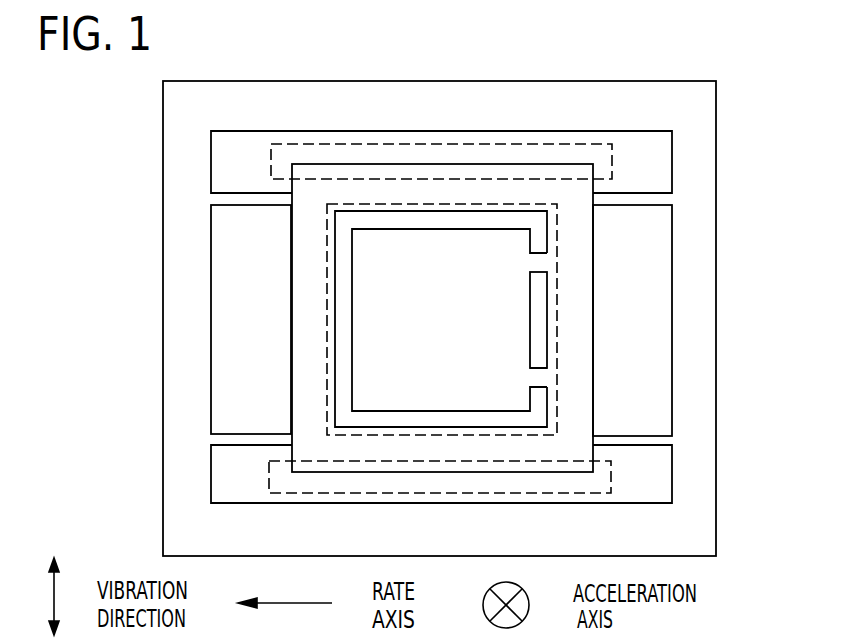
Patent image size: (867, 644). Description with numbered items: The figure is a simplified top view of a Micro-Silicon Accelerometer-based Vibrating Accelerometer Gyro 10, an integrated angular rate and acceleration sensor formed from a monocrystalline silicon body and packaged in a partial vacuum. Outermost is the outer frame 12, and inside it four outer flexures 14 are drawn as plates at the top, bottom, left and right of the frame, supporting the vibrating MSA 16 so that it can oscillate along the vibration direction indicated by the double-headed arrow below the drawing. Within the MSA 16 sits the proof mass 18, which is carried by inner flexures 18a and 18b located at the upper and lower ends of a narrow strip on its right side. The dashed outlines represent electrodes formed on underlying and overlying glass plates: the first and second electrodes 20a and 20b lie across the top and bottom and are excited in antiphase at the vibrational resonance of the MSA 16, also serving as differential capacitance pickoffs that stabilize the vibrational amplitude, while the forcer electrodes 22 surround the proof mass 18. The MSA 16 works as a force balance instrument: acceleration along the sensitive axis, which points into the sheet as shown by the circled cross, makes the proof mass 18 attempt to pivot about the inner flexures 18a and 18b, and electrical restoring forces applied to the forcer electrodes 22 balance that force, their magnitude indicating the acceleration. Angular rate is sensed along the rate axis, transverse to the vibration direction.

The Vibrating Accelerometer Gyro 10 is at (754, 291).
The outer frame 12 is at (163, 283).
The outer flexures 14 is at (228, 205).
The vibrating MSA 16 is at (290, 304).
The proof mass 18 is at (482, 318).
The inner flexure 18a is at (537, 272).
The inner flexure 18b is at (537, 388).
The first electrode 20a is at (615, 168).
The second electrode 20b is at (610, 478).
The forcer electrodes 22 is at (557, 283).